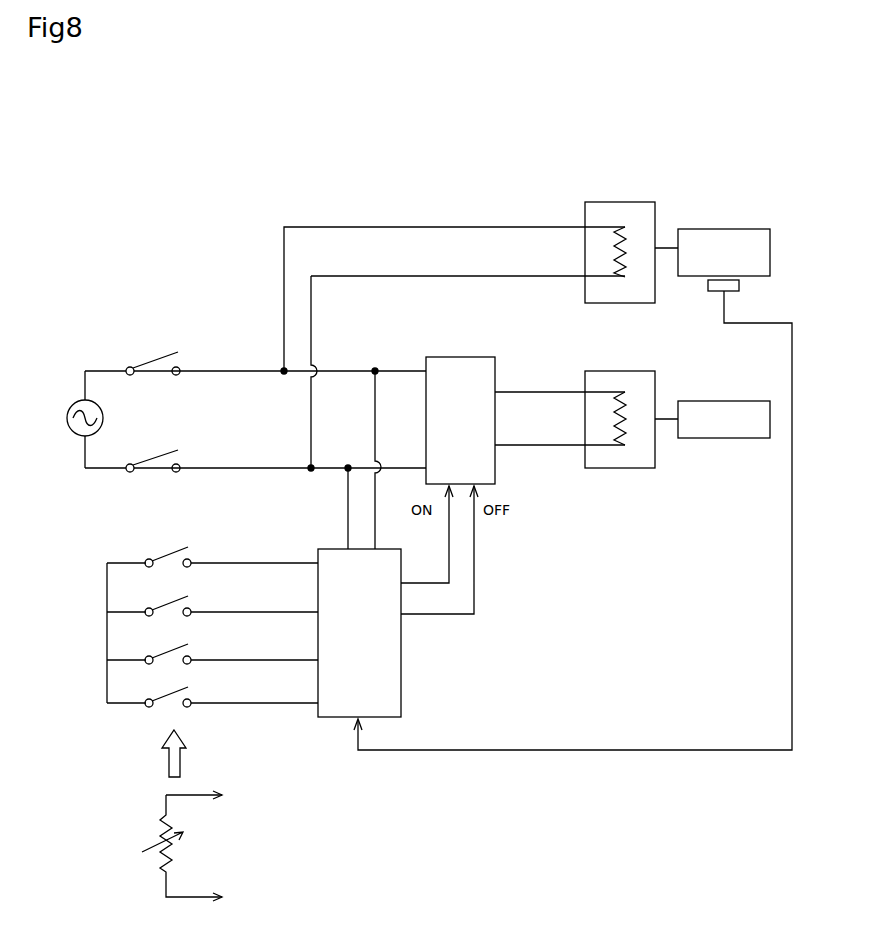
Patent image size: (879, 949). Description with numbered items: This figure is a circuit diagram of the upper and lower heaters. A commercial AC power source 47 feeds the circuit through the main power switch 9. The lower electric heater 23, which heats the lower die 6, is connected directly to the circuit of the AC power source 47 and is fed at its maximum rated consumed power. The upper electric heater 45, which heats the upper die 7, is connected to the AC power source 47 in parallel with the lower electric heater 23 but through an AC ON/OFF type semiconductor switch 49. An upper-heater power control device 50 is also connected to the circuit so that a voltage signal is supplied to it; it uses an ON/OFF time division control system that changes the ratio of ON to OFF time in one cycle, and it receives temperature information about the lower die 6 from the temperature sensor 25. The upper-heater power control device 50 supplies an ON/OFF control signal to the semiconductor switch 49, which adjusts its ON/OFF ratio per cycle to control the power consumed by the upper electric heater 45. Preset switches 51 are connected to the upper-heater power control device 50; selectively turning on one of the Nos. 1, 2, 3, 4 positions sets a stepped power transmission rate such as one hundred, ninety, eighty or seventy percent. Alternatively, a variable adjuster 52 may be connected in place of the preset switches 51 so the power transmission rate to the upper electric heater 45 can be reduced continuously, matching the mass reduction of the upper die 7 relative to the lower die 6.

The lower electric heater 23 is at (657, 223).
The lower die 6 is at (743, 229).
The temperature sensor 25 is at (740, 286).
The main power switch 9 is at (153, 453).
The AC power source 47 is at (70, 432).
The semiconductor switch 49 is at (495, 465).
The upper electric heater 45 is at (622, 469).
The upper die 7 is at (727, 440).
The upper-heater power control device 50 is at (401, 675).
The preset switch 51 is at (115, 635).
The No. 1 preset switch 1 is at (165, 549).
The No. 2 preset switch 2 is at (165, 598).
The No. 3 preset switch 3 is at (165, 646).
The No. 4 preset switch 4 is at (165, 690).
The variable adjuster 52 is at (166, 884).